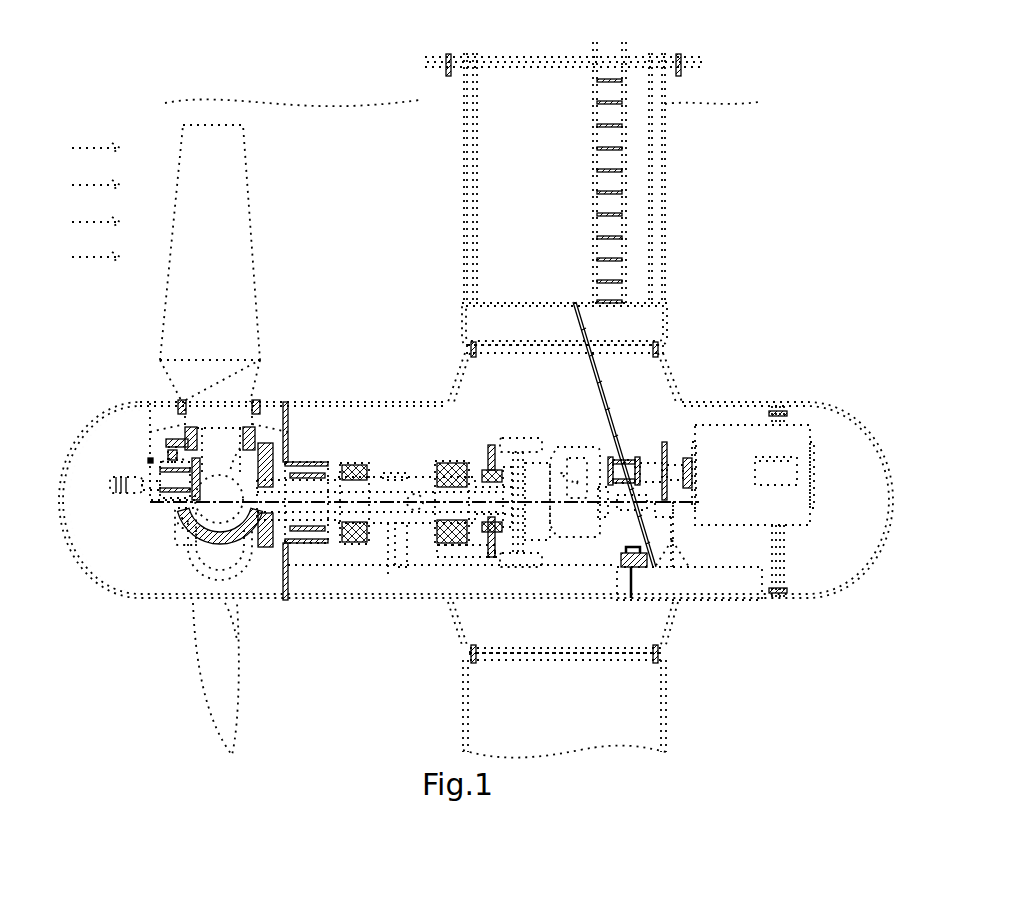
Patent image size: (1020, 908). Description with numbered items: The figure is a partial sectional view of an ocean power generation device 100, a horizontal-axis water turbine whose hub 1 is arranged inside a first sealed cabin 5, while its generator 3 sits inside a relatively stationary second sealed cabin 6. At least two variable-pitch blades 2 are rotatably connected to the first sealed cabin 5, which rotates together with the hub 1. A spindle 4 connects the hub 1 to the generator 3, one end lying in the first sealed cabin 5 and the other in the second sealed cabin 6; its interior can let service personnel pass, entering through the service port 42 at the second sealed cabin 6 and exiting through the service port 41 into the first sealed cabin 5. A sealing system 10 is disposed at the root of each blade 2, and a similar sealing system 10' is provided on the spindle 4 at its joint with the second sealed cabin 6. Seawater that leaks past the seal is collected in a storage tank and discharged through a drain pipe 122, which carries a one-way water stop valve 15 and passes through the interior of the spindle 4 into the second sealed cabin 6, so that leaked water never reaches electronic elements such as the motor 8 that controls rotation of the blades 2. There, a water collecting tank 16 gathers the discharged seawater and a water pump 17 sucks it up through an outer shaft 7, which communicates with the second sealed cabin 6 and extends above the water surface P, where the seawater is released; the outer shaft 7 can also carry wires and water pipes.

The ocean power generation device 100 is at (823, 127).
The water surface P is at (350, 102).
The variable-pitch blades 2 is at (240, 282).
The service port 41 is at (229, 472).
The sealing system 10 is at (171, 403).
The sealing system 10' is at (333, 436).
The service port 42 is at (417, 493).
The one-way water stop valve 15 is at (147, 460).
The motor 8 is at (112, 480).
The drain pipe 122 is at (153, 503).
The first sealed cabin 5 is at (112, 552).
The hub 1 is at (202, 543).
The spindle 4 is at (417, 527).
The outer shaft 7 is at (665, 228).
The second sealed cabin 6 is at (652, 408).
The generator 3 is at (797, 435).
The water collecting tank 16 is at (720, 578).
The water pump 17 is at (645, 565).